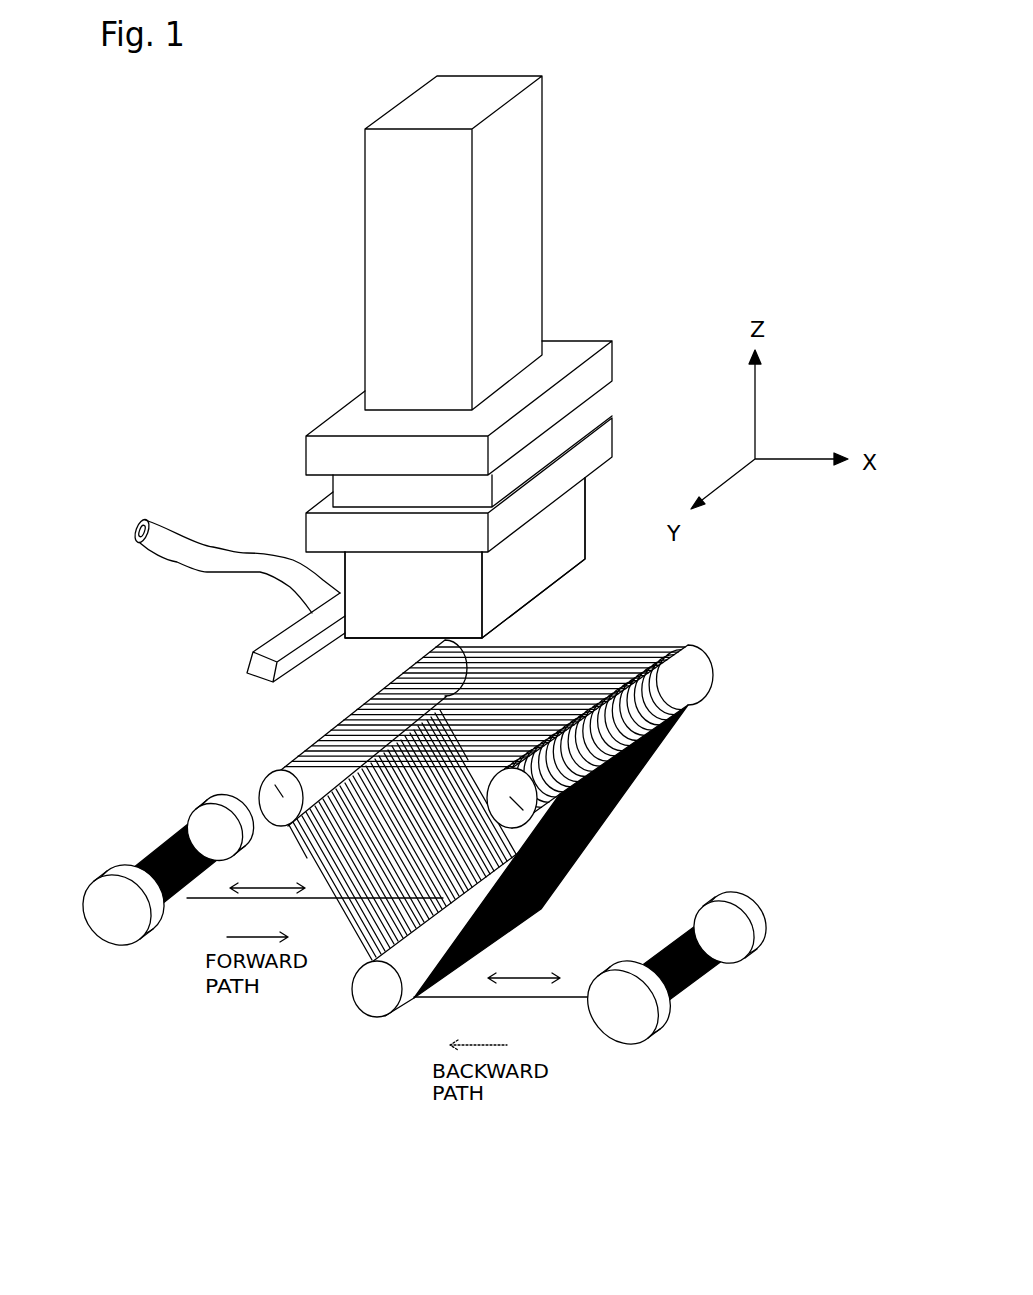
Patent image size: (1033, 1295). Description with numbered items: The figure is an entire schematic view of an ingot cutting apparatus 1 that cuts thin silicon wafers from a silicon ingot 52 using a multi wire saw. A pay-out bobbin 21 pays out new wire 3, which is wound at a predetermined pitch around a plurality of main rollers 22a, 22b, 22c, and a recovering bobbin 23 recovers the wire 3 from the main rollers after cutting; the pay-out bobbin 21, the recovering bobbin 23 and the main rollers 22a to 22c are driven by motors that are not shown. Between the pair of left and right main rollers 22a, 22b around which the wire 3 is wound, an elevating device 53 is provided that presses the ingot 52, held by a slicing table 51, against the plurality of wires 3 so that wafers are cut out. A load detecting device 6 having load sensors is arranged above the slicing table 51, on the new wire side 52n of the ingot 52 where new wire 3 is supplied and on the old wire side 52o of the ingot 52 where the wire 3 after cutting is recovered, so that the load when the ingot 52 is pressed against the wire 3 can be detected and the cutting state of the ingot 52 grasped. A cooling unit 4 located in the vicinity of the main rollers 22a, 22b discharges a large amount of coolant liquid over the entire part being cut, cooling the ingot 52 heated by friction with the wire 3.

The ingot cutting apparatus 1 is at (490, 361).
The wire 3 is at (653, 758).
The cooling unit 4 is at (147, 518).
The load detecting device 6 is at (562, 432).
The pay-out bobbin 21 is at (618, 1012).
The main roller 22a is at (612, 800).
The main roller 22b is at (283, 797).
The main roller 22c is at (373, 990).
The recovering bobbin 23 is at (113, 917).
The slicing table 51 is at (327, 533).
The ingot 52 is at (398, 592).
The new wire side 52n is at (496, 611).
The old wire side 52o is at (571, 553).
The elevating device 53 is at (518, 267).